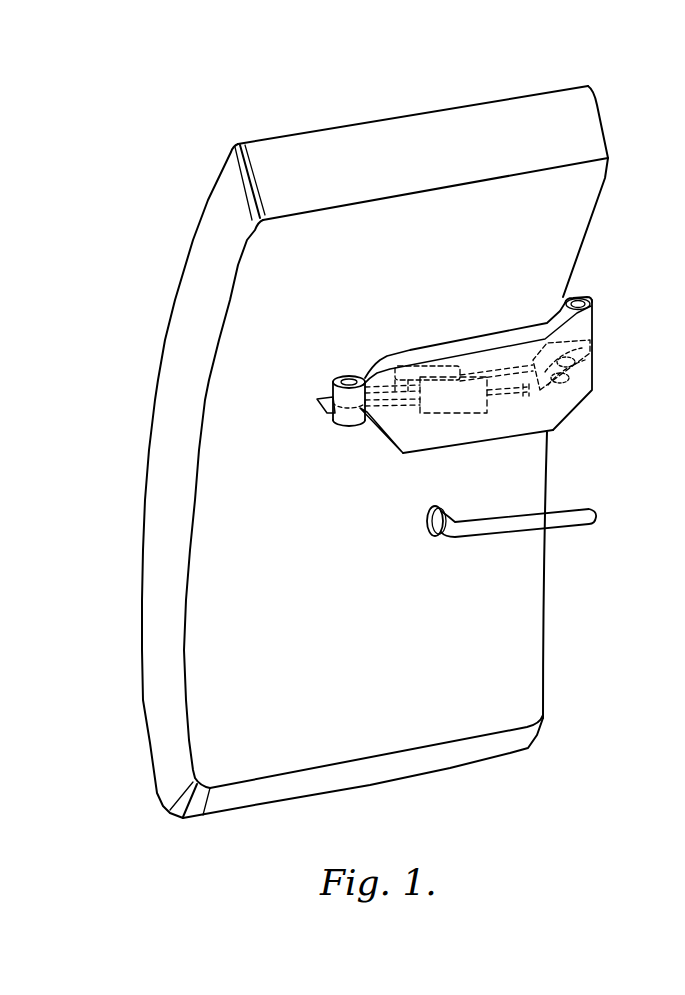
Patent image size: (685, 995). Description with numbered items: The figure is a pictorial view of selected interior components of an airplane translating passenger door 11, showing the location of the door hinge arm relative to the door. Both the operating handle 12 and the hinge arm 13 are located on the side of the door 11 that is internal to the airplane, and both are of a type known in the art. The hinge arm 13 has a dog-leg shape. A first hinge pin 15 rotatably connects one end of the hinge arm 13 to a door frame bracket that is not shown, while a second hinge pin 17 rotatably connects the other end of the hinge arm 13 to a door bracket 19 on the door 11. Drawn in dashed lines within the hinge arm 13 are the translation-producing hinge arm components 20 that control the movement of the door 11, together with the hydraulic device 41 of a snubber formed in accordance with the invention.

The door 11 is at (295, 145).
The operating handle 12 is at (566, 527).
The hinge arm 13 is at (578, 403).
The first hinge pin 15 is at (590, 297).
The second hinge pin 17 is at (353, 378).
The door bracket 19 is at (317, 401).
The translation-producing hinge arm components 20 is at (503, 362).
The hydraulic device 41 is at (440, 413).